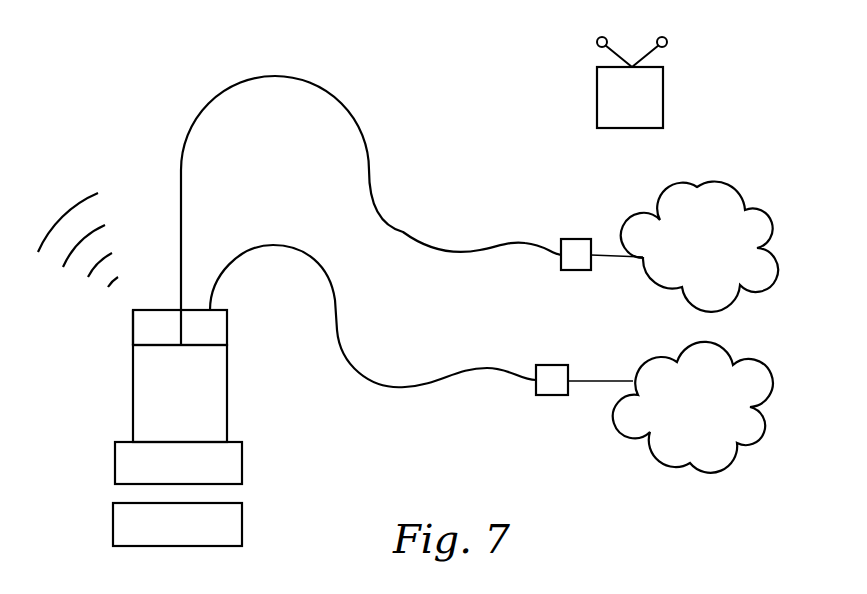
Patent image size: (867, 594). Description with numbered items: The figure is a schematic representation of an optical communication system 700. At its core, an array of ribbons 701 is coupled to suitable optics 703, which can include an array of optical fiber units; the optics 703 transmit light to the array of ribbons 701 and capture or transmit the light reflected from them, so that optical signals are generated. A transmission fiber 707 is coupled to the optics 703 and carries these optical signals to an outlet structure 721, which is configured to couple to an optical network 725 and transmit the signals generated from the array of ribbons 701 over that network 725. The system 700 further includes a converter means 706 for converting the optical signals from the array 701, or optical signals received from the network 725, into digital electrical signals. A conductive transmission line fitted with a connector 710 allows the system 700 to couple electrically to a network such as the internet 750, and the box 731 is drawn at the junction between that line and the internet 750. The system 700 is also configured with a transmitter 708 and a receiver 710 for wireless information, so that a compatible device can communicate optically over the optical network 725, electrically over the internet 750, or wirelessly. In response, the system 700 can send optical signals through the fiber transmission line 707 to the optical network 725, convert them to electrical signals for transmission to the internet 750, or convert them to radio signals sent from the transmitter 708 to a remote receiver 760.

The optical communication system 700 is at (120, 100).
The array of ribbons 701 is at (242, 523).
The optics 703 is at (242, 460).
The converter means 706 is at (227, 396).
The transmission fiber 707 is at (350, 110).
The transmitter 708 is at (133, 328).
The connector 710 is at (227, 328).
The outlet structure 721 is at (575, 238).
The optical network 725 is at (763, 215).
The interface device 731 is at (547, 395).
The internet 750 is at (750, 365).
The remote receiver 760 is at (663, 100).